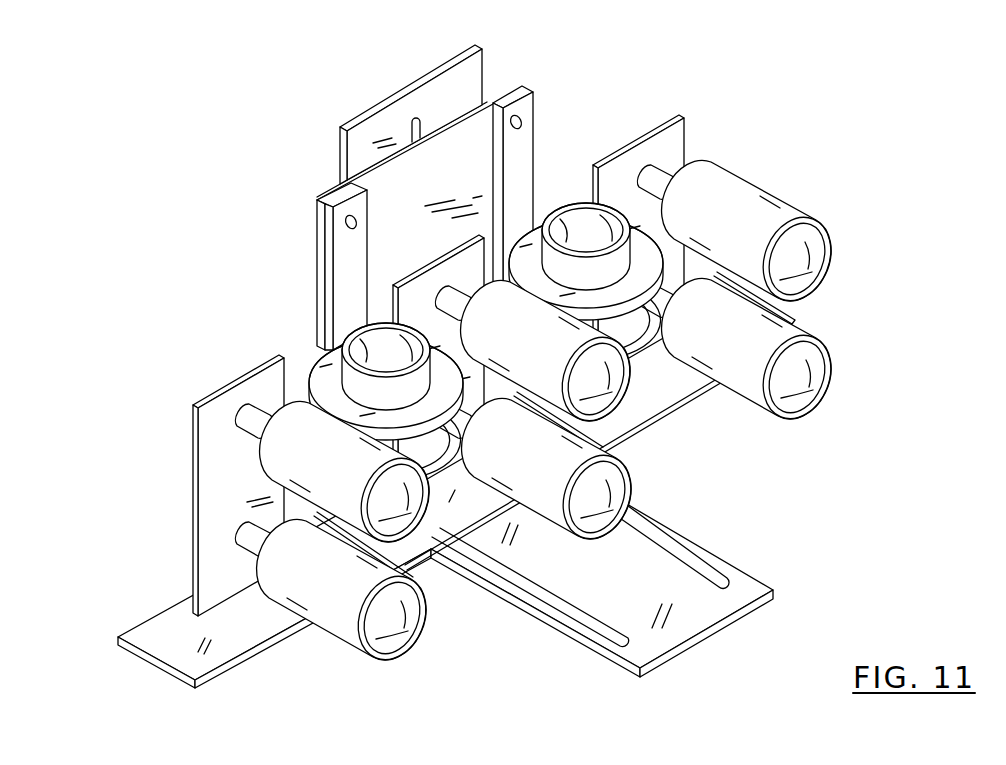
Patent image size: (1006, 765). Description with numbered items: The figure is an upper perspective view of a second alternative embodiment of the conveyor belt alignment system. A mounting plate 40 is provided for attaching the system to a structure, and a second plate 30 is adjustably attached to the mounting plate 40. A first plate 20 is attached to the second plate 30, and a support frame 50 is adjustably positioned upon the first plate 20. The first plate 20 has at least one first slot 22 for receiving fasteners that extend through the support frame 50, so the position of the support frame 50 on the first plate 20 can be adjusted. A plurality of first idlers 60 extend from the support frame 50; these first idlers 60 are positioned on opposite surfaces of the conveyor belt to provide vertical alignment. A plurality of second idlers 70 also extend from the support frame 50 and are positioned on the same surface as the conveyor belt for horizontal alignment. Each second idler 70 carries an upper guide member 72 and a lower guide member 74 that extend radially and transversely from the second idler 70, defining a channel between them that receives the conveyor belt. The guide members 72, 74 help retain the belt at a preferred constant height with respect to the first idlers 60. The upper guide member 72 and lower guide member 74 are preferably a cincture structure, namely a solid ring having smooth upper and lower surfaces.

The first plate 20 is at (770, 598).
The first slot 22 is at (735, 570).
The second plate 30 is at (340, 130).
The mounting plate 40 is at (317, 205).
The support frame 50 is at (195, 405).
The first idlers 60 is at (267, 565).
The second idlers 70 is at (360, 335).
The upper guide member 72 is at (315, 383).
The lower guide member 74 is at (420, 588).